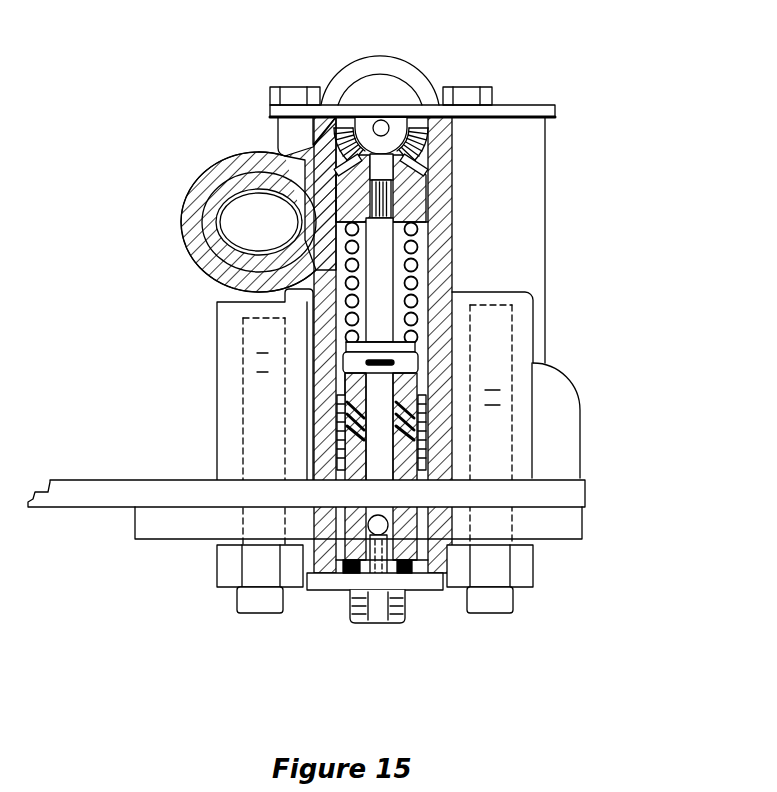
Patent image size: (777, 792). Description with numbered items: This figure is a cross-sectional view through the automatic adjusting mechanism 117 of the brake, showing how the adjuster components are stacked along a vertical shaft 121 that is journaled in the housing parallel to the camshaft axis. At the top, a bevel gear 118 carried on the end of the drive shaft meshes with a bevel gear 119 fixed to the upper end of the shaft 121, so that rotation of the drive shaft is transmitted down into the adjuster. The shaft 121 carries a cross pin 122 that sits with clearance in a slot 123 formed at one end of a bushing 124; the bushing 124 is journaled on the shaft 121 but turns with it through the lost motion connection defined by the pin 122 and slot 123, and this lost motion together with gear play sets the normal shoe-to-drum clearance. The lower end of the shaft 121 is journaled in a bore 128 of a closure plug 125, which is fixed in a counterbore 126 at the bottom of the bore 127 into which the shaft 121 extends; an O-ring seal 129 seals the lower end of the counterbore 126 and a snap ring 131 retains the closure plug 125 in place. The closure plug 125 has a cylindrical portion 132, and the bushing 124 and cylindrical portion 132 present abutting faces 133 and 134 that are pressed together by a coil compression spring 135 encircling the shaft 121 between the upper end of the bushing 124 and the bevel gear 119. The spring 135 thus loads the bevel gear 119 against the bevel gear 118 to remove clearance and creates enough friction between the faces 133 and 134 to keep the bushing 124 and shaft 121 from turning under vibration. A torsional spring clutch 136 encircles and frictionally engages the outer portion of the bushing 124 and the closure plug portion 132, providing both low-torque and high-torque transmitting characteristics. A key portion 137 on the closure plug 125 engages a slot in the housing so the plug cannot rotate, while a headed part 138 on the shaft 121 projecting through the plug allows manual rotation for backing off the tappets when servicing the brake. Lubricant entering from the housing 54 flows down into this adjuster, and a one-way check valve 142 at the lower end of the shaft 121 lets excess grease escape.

The housing 54 is at (453, 137).
The automatic adjusting mechanism 117 is at (520, 236).
The bevel gear 118 is at (428, 117).
The bevel gear 119 is at (432, 167).
The shaft 121 is at (392, 262).
The cross pin 122 is at (400, 357).
The slot 123 is at (413, 335).
The bushing 124 is at (470, 455).
The closure plug 125 is at (430, 578).
The counterbore 126 is at (465, 547).
The bore 127 is at (425, 505).
The bore 128 is at (375, 435).
The O-ring seal 129 is at (307, 547).
The snap ring 131 is at (312, 578).
The cylindrical portion 132 is at (350, 445).
The abutting face 133 is at (455, 468).
The abutting face 134 is at (338, 452).
The coil compression spring 135 is at (350, 302).
The torsional spring clutch 136 is at (340, 410).
The key portion 137 is at (460, 580).
The headed part 138 is at (348, 613).
The one-way check valve 142 is at (383, 597).